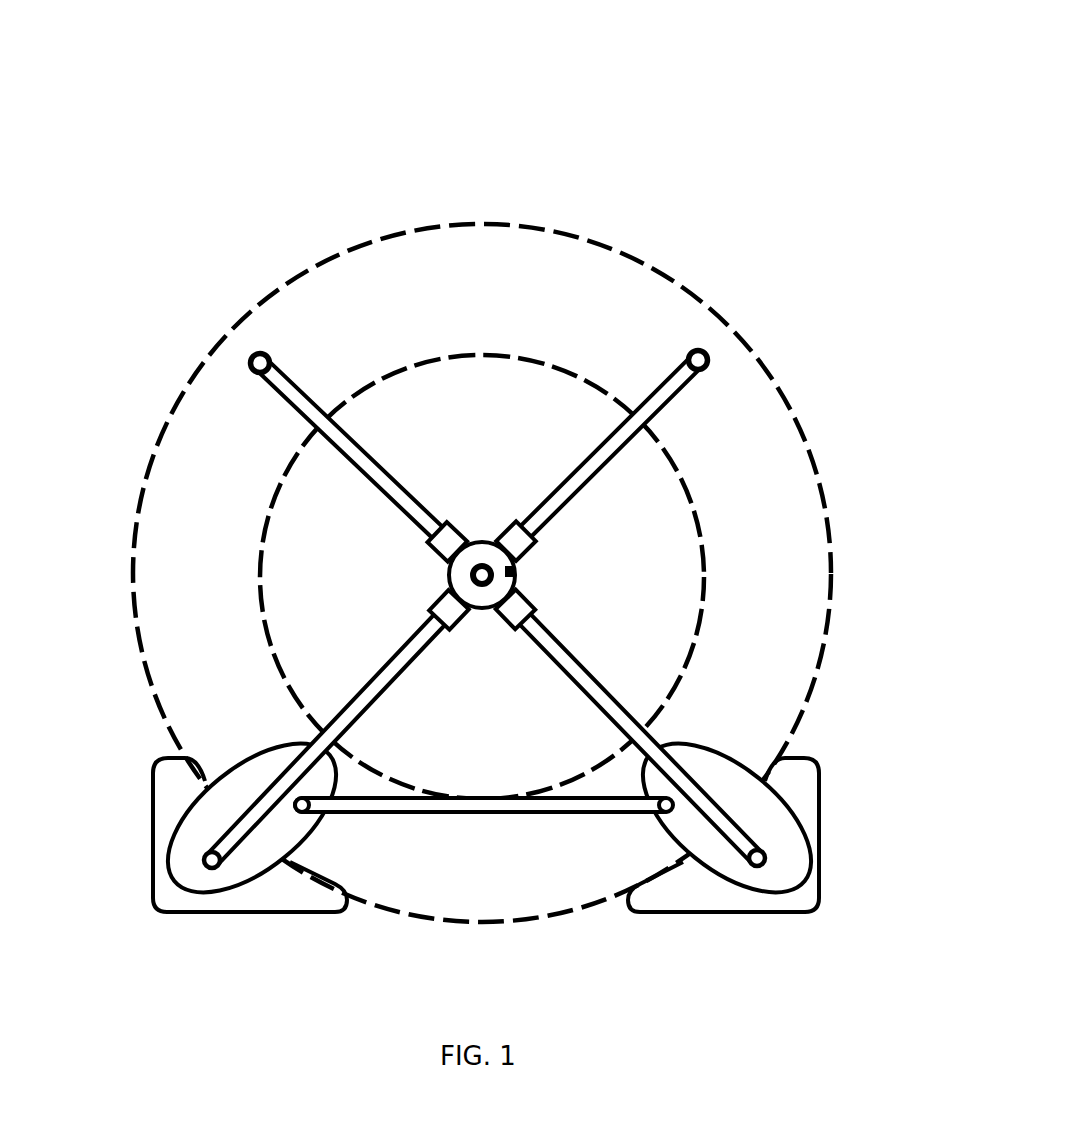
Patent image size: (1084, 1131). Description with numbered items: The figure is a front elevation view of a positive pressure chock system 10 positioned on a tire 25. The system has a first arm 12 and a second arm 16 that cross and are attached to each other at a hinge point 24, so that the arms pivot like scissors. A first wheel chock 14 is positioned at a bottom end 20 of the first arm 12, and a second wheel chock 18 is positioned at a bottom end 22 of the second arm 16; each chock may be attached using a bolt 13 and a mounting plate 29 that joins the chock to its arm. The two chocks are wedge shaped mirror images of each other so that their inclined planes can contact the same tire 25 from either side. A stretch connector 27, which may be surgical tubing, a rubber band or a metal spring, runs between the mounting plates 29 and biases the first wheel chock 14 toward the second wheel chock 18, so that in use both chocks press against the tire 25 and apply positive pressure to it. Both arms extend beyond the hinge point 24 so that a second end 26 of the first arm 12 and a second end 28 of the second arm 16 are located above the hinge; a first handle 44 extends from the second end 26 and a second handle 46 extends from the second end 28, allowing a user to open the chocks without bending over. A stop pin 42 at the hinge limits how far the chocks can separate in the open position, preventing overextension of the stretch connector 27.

The positive pressure chock system 10 is at (782, 81).
The first arm 12 is at (348, 700).
The bolt 13 is at (212, 866).
The first wheel chock 14 is at (152, 820).
The second arm 16 is at (606, 688).
The second wheel chock 18 is at (820, 825).
The bottom end 20 is at (223, 847).
The bottom end 22 is at (742, 847).
The hinge point 24 is at (483, 562).
The tire 25 is at (465, 258).
The second end 26 is at (684, 380).
The stretch connector 27 is at (565, 810).
The second end 28 is at (275, 385).
The mounting plate 29 is at (237, 775).
The stop pin 42 is at (515, 568).
The first handle 44 is at (701, 357).
The second handle 46 is at (257, 356).